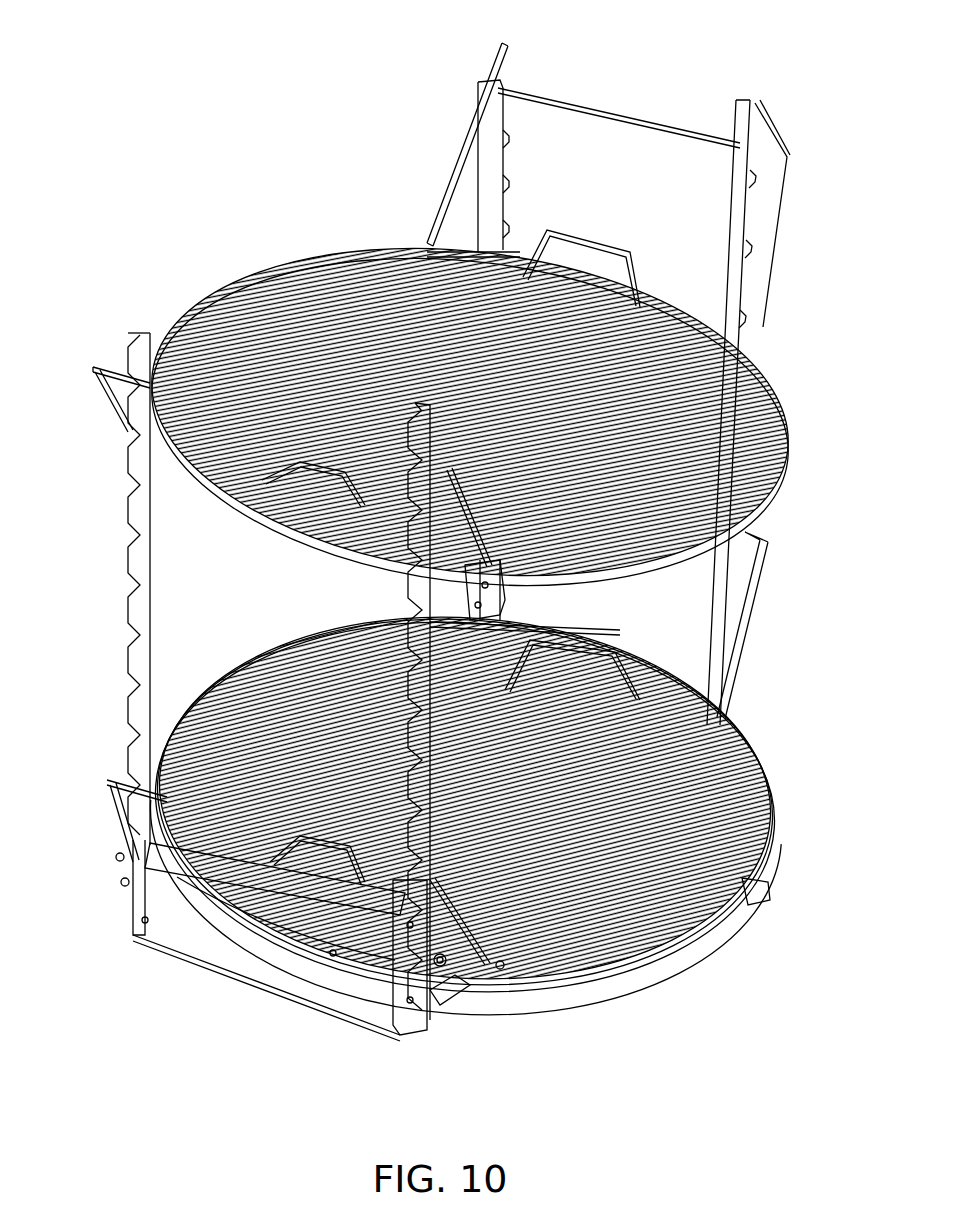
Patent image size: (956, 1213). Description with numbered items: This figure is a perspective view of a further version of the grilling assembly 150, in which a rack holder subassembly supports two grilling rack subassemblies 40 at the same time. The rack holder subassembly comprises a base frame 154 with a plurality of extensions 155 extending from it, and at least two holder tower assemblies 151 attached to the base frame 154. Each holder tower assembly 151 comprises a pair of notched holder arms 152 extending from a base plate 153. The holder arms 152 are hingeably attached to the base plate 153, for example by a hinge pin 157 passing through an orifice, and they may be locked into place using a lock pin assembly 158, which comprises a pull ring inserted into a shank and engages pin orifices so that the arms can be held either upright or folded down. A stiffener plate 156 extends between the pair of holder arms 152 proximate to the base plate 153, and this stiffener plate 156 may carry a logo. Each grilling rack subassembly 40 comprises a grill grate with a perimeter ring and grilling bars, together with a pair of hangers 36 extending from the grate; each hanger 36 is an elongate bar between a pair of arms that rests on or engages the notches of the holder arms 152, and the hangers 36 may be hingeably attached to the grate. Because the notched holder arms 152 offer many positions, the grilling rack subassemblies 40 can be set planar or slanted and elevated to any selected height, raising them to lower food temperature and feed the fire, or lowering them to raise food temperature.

The grilling assembly 150 is at (184, 160).
The hanger 36 is at (610, 110).
The grilling rack subassembly 40 is at (340, 258).
The notched holder arm 152 is at (504, 147).
The holder tower assembly 151 is at (520, 598).
The base plate 153 is at (210, 965).
The base frame 154 is at (680, 950).
The extension 155 is at (762, 898).
The stiffener plate 156 is at (332, 940).
The hinge pin 157 is at (130, 930).
The lock pin assembly 158 is at (121, 862).